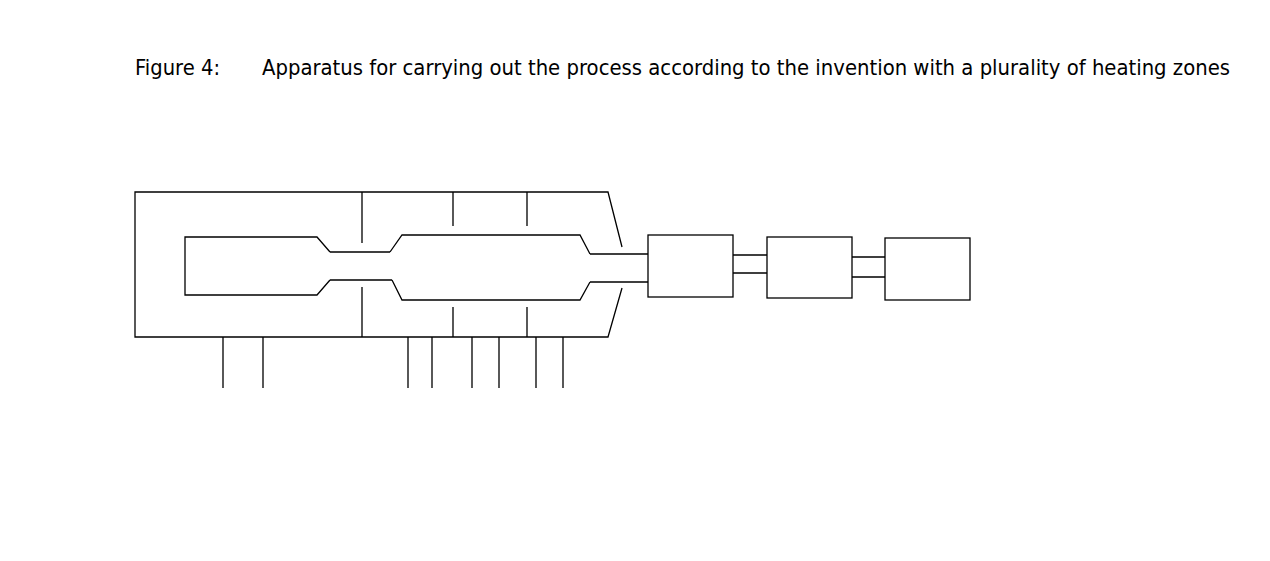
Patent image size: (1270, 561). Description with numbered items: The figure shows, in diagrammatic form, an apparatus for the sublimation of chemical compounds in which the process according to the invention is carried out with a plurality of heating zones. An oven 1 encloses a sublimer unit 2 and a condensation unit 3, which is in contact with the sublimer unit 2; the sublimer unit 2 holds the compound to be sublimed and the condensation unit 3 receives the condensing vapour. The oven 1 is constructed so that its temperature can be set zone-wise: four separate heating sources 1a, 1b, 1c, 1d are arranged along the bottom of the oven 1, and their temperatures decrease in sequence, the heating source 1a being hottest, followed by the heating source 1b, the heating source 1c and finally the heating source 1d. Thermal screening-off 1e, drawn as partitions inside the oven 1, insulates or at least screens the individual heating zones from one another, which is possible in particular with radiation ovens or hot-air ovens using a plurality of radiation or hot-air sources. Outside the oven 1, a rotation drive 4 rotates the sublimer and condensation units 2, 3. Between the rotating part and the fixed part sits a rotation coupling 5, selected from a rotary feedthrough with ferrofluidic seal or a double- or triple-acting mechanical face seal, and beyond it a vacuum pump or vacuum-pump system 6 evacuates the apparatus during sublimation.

The oven 1 is at (169, 314).
The first heating source 1a is at (242, 378).
The second heating source 1b is at (419, 378).
The third heating source 1c is at (485, 380).
The fourth heating source 1d is at (550, 380).
The thermal screening-off 1e is at (370, 208).
The sublimer unit 2 is at (257, 266).
The condensation unit 3 is at (490, 267).
The rotation drive 4 is at (690, 266).
The rotation coupling 5 is at (809, 267).
The vacuum pump or vacuum-pump system 6 is at (927, 269).